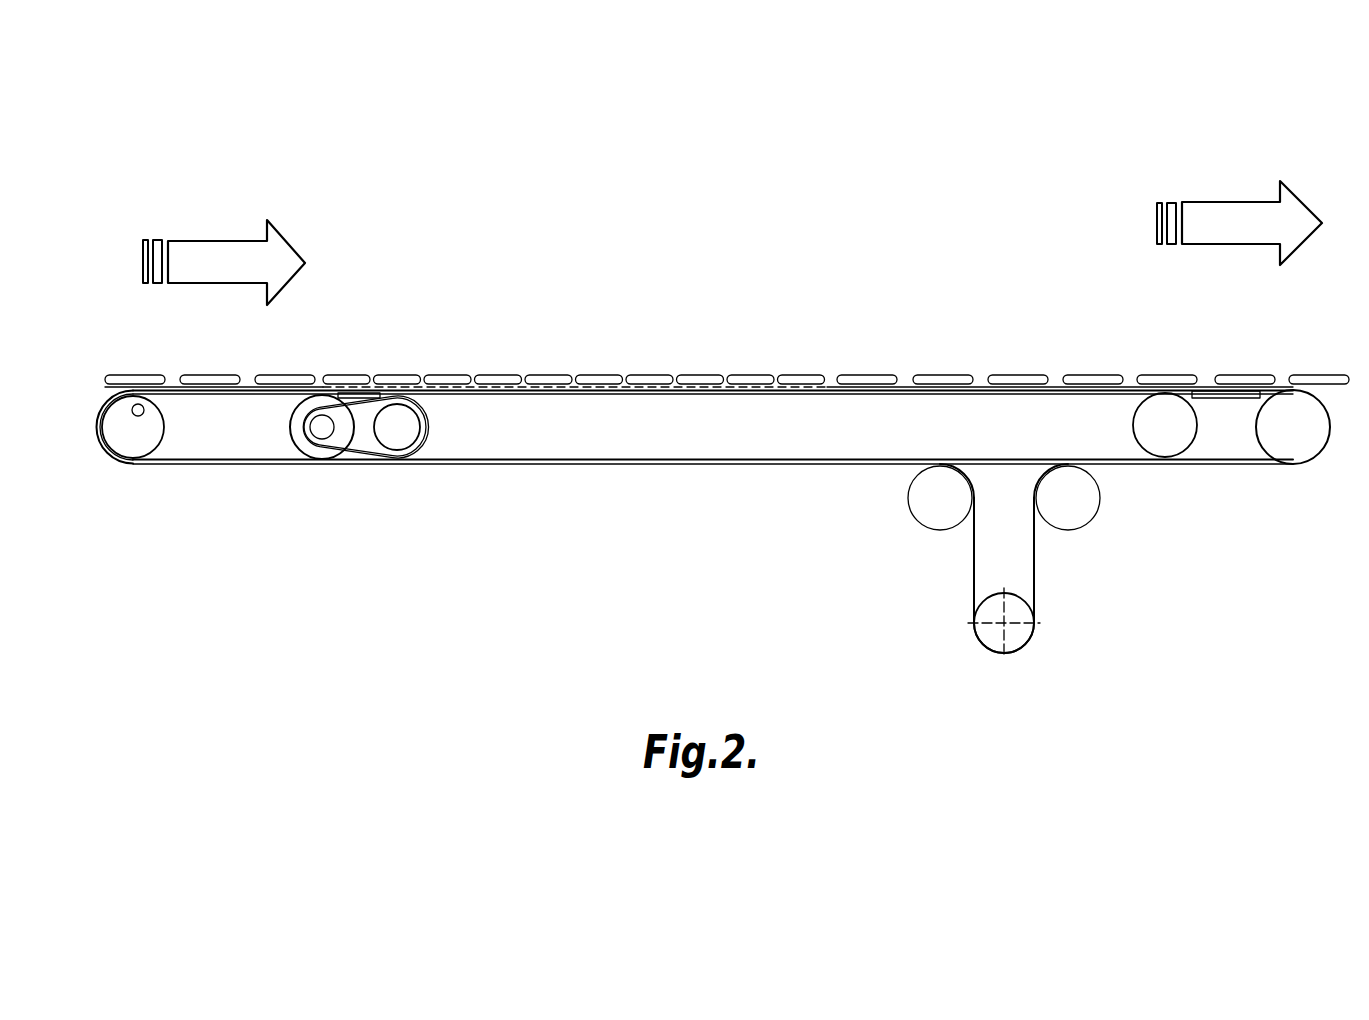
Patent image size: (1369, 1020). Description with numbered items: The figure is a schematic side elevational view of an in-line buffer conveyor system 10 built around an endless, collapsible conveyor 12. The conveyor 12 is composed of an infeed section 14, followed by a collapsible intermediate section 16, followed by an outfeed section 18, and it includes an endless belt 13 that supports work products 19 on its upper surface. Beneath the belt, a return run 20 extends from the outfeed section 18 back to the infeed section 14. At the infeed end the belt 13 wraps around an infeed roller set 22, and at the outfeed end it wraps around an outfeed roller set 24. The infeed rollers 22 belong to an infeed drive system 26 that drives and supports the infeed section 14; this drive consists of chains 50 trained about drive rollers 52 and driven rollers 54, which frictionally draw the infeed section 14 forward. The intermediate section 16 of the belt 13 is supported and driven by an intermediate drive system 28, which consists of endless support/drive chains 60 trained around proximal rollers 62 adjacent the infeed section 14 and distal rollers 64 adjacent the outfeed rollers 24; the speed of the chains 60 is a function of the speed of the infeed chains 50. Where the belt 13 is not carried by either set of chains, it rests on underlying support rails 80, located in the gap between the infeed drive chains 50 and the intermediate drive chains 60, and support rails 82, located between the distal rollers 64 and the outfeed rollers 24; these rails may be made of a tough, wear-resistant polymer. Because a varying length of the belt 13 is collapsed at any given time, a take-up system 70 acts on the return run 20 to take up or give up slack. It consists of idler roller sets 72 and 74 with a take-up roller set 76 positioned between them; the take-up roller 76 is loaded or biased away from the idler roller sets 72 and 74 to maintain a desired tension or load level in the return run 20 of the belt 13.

The in-line buffer conveyor system 10 is at (75, 313).
The endless collapsible conveyor 12 is at (232, 480).
The endless belt 13 is at (522, 385).
The infeed section 14 is at (190, 357).
The collapsible intermediate section 16 is at (640, 346).
The outfeed section 18 is at (1278, 353).
The work products 19 is at (745, 378).
The return run 20 is at (566, 467).
The infeed roller set 22 is at (100, 410).
The outfeed roller set 24 is at (1262, 447).
The infeed drive system 26 is at (278, 435).
The intermediate drive system 28 is at (432, 443).
The chains 50 is at (158, 460).
The drive rollers 52 is at (292, 420).
The driven rollers 54 is at (132, 406).
The endless support/drive chains 60 is at (645, 460).
The proximal rollers 62 is at (420, 410).
The distal rollers 64 is at (1140, 402).
The take-up system 70 is at (1063, 570).
The idler roller set 72 is at (1082, 522).
The idler roller set 74 is at (916, 515).
The take-up roller set 76 is at (1025, 637).
The support rails 80 is at (352, 392).
The support rails 82 is at (1208, 392).